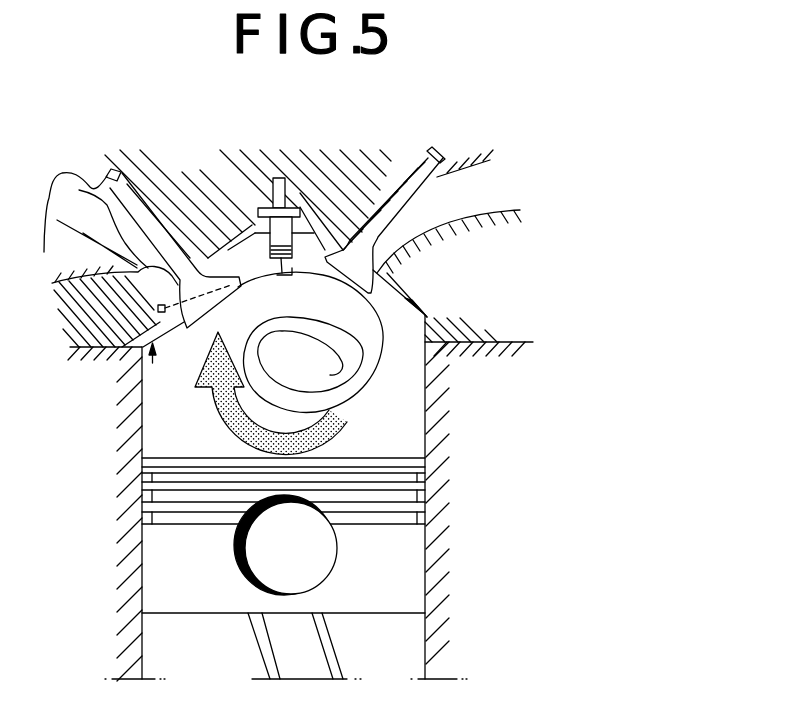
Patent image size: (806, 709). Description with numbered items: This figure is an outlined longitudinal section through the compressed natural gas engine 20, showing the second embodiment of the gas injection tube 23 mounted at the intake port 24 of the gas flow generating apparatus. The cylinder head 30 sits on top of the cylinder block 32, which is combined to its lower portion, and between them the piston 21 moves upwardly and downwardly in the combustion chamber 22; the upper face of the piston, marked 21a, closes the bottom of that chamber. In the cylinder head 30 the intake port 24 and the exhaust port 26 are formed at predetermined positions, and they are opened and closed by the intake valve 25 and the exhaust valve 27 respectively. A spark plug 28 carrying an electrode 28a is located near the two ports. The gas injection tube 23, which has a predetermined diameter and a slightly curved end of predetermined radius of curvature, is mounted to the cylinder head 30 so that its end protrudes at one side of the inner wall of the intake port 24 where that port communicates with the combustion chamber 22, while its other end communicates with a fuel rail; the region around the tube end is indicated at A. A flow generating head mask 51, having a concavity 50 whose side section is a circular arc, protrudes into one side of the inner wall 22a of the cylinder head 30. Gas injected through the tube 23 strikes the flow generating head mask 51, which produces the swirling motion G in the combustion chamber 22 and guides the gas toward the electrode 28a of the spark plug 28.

The compressed natural gas engine 20 is at (519, 138).
The piston 21 is at (410, 570).
The piston top surface 21a is at (143, 462).
The combustion chamber 22 is at (420, 444).
The inner wall of the cylinder head 22a is at (412, 306).
The gas injection tube 23 is at (70, 297).
The intake port 24 is at (168, 222).
The intake valve 25 is at (46, 257).
The exhaust port 26 is at (492, 209).
The exhaust valve 27 is at (429, 176).
The spark plug 28 is at (303, 192).
The electrode 28a is at (412, 286).
The cylinder head 30 is at (578, 253).
The cylinder block 32 is at (484, 518).
The concavity 50 is at (143, 355).
The flow generating head mask 51 is at (143, 380).
The air passage region A is at (75, 212).
The swirl gas flow G is at (372, 362).